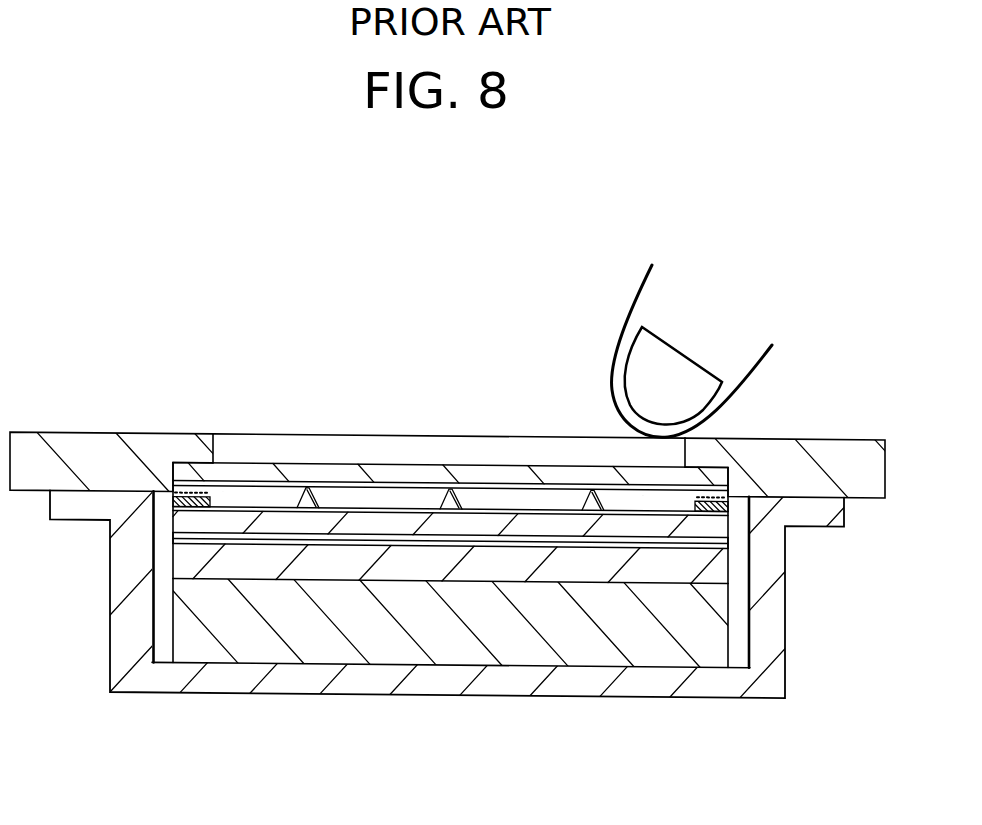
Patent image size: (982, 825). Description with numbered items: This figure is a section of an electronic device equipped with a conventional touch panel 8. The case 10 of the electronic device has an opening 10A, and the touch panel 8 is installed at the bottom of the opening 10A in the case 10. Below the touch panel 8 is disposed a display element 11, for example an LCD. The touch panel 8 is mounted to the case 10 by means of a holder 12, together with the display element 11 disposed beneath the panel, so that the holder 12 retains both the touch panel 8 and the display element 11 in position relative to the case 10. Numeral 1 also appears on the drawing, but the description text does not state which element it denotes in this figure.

The touch panel 1 is at (381, 463).
The touch panel 8 is at (565, 545).
The case 10 is at (107, 437).
The opening 10A is at (250, 437).
The display element 11 is at (392, 657).
The holder 12 is at (210, 697).